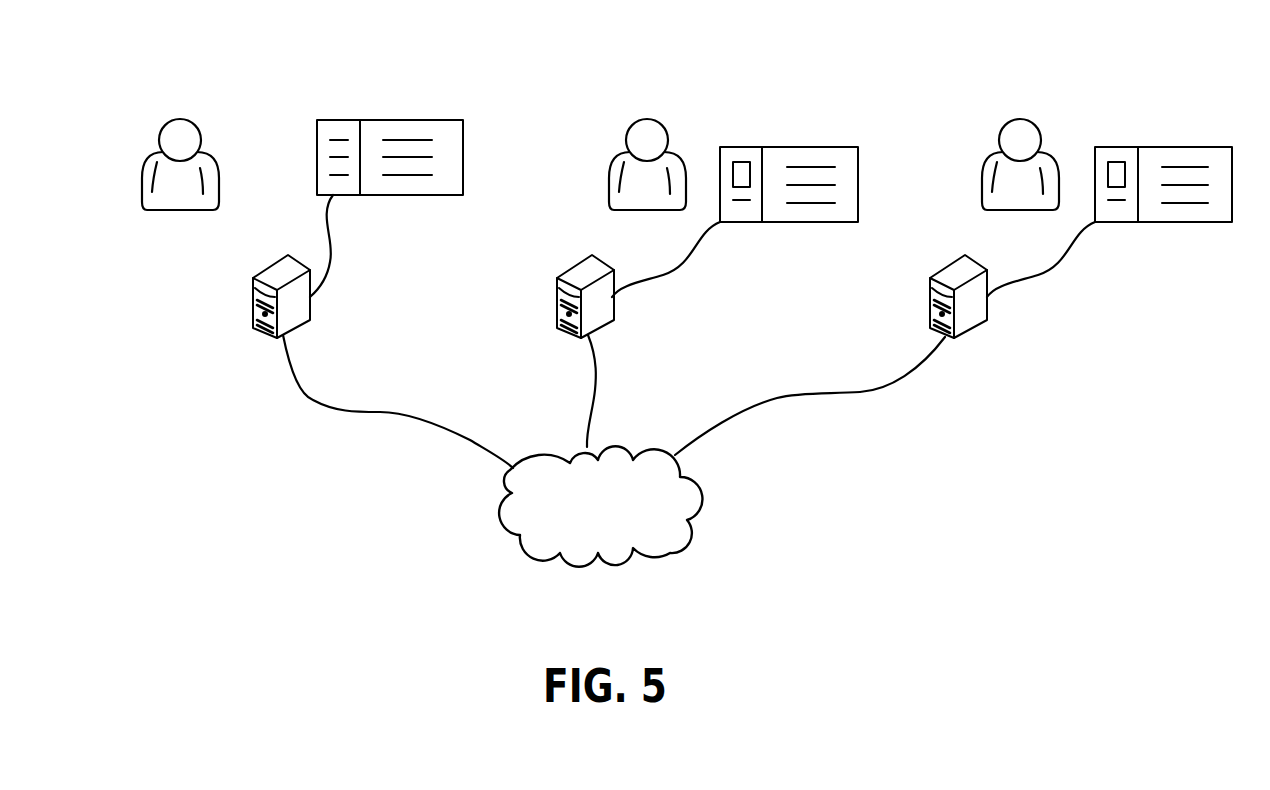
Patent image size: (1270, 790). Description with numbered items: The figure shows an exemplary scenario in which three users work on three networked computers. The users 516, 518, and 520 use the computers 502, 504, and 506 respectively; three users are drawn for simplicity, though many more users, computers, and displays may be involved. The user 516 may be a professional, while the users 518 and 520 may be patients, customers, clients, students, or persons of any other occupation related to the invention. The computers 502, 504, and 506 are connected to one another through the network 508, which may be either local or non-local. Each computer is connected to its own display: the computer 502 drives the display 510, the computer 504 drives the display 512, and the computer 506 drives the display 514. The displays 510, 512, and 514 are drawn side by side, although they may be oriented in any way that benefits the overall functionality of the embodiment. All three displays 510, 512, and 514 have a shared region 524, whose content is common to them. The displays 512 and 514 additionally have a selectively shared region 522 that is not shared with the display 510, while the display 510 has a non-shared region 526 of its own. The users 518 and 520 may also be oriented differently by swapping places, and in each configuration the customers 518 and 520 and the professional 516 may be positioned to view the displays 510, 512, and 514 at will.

The computer 502 is at (293, 333).
The computer 504 is at (595, 333).
The computer 506 is at (972, 333).
The network 508 is at (672, 552).
The display 510 is at (323, 122).
The display 512 is at (733, 147).
The display 514 is at (1108, 147).
The user 516 is at (160, 152).
The user 518 is at (620, 152).
The user 520 is at (995, 152).
The selectively shared region 522 is at (748, 150).
The shared region 524 is at (428, 128).
The non-shared region 526 is at (338, 128).